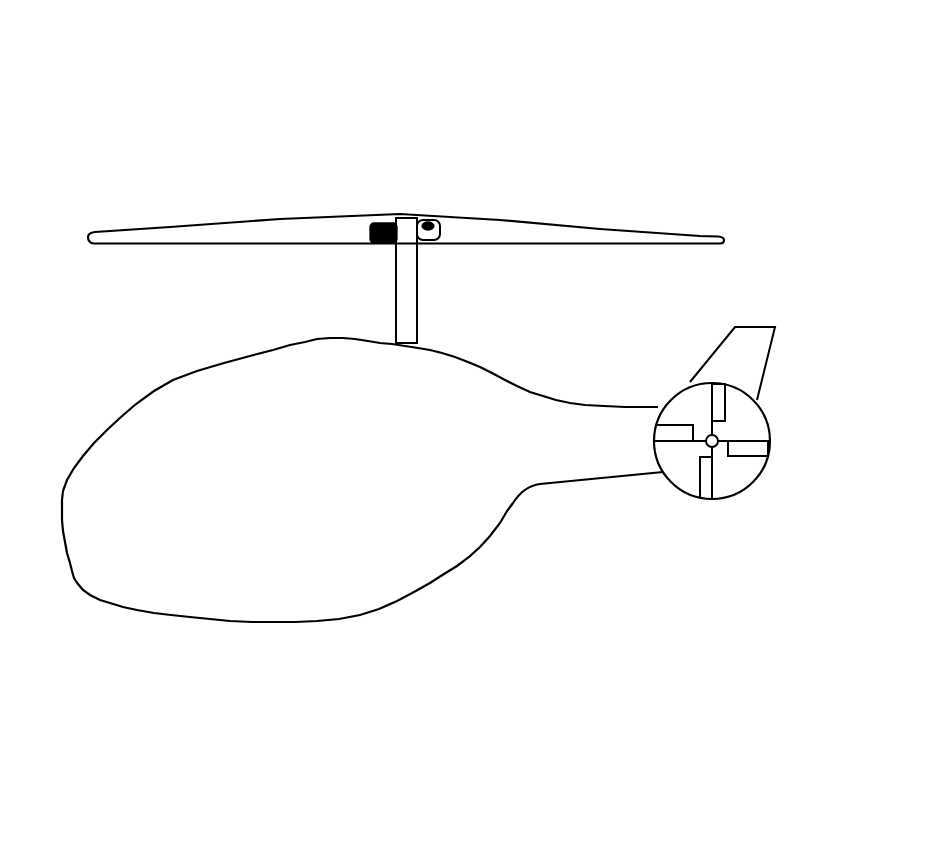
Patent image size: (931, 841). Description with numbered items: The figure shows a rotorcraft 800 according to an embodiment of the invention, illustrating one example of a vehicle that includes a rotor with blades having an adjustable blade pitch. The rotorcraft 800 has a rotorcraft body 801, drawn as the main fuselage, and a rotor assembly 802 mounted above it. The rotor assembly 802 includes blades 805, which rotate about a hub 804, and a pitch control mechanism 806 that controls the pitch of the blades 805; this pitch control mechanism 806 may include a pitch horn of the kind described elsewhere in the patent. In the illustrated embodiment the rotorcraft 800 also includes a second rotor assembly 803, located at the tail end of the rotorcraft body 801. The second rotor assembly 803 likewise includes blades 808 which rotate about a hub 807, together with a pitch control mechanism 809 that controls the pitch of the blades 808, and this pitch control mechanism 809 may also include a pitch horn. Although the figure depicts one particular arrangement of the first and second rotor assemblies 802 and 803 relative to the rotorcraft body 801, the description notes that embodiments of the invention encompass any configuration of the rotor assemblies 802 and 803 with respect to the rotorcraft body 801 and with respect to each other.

The rotorcraft 800 is at (676, 98).
The rotorcraft body 801 is at (100, 567).
The rotor assembly 802 is at (378, 142).
The second rotor assembly 803 is at (766, 505).
The hub 804 is at (413, 298).
The blades 805 is at (218, 214).
The pitch control mechanism 806 is at (383, 263).
The hub 807 is at (712, 441).
The blades 808 is at (702, 383).
The pitch control mechanism 809 is at (737, 425).